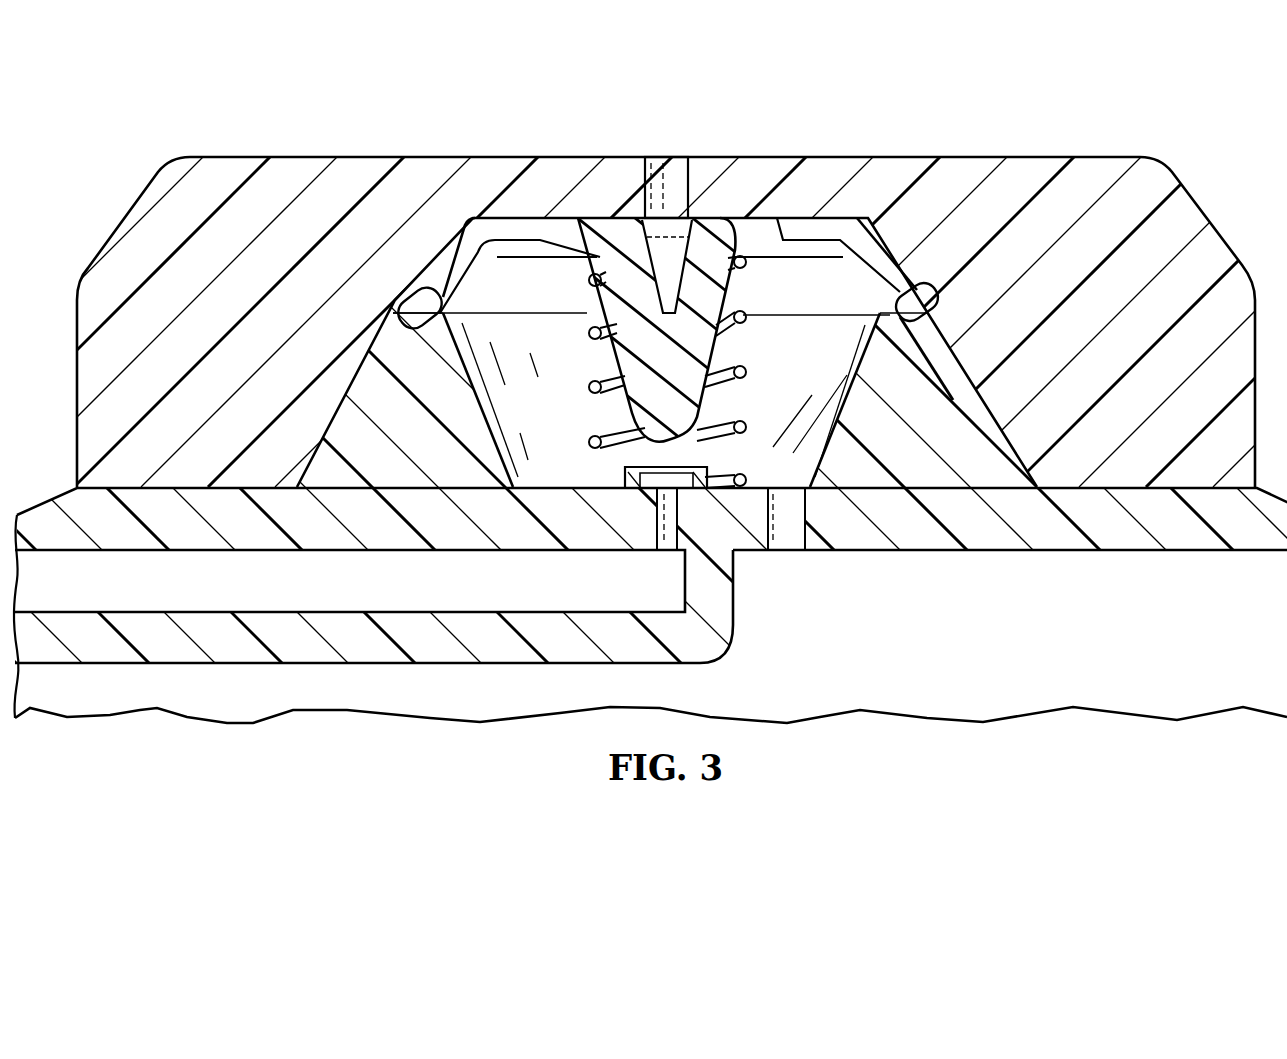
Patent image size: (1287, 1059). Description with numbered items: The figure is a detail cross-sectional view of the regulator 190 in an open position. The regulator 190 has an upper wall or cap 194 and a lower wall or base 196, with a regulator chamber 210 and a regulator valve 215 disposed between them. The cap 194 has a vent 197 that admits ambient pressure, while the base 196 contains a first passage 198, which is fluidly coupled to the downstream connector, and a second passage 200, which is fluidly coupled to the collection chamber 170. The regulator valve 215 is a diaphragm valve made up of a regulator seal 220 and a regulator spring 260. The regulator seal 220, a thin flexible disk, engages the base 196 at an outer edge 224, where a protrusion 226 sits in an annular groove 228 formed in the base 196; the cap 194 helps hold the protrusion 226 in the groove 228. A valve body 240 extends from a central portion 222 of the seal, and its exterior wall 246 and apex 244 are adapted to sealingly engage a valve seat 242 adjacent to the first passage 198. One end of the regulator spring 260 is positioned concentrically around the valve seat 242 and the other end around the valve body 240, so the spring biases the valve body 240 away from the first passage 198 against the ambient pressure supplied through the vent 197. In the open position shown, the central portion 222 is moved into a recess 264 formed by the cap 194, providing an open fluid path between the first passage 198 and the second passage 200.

The collection chamber 170 is at (831, 673).
The regulator 190 is at (740, 101).
The cap 194 is at (297, 165).
The base 196 is at (927, 550).
The vent 197 is at (683, 157).
The first passage 198 is at (670, 545).
The second passage 200 is at (773, 535).
The regulator chamber 210 is at (520, 347).
The regulator valve 215 is at (589, 205).
The regulator seal 220 is at (632, 228).
The central portion 222 is at (847, 250).
The outer edge 224 is at (935, 297).
The protrusion 226 is at (900, 320).
The groove 228 is at (912, 338).
The valve body 240 is at (693, 370).
The valve seat 242 is at (627, 462).
The apex 244 is at (667, 447).
The exterior wall 246 is at (722, 337).
The regulator spring 260 is at (590, 388).
The recess 264 is at (515, 232).